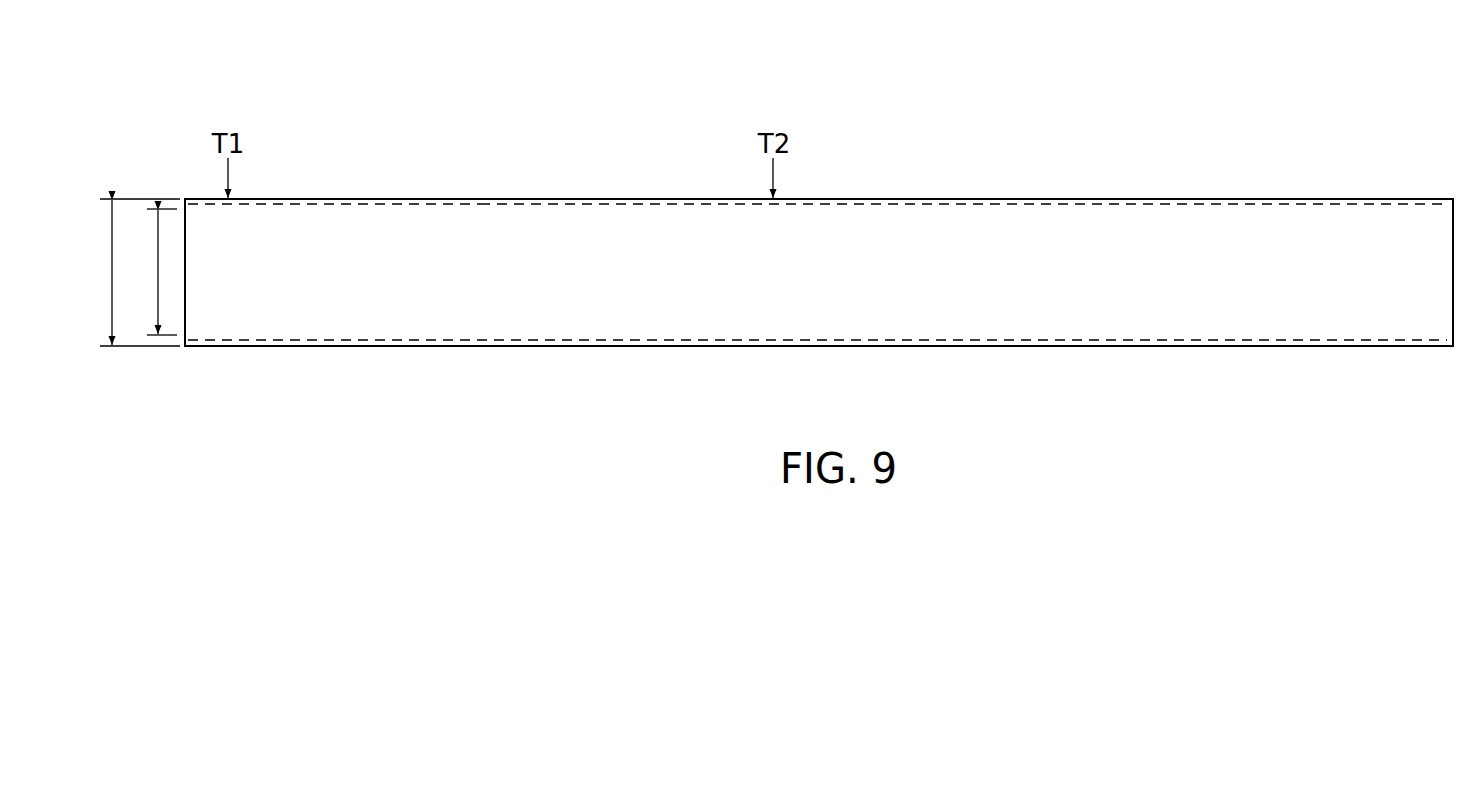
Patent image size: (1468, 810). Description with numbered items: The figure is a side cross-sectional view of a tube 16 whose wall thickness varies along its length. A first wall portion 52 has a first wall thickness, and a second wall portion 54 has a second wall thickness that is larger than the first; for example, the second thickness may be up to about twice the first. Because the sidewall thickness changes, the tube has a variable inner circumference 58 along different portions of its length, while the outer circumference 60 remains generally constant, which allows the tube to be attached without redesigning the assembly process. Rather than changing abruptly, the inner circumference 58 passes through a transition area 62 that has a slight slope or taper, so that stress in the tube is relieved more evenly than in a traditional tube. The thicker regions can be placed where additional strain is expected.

The tube 16 is at (1204, 160).
The first wall portion 52 is at (228, 205).
The second wall portion 54 is at (773, 205).
The inner circumference 58 is at (160, 272).
The outer circumference 60 is at (136, 272).
The transition area 62 is at (583, 199).